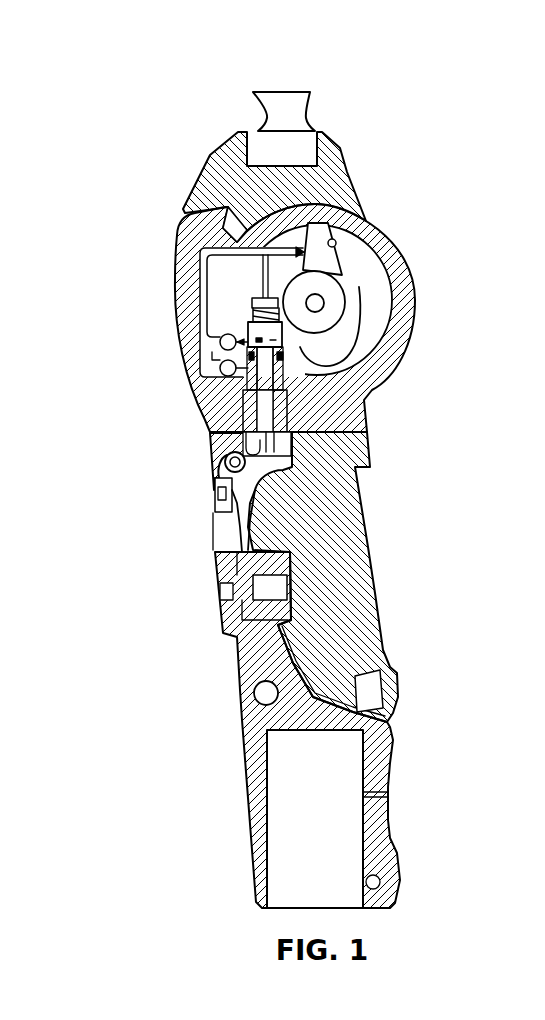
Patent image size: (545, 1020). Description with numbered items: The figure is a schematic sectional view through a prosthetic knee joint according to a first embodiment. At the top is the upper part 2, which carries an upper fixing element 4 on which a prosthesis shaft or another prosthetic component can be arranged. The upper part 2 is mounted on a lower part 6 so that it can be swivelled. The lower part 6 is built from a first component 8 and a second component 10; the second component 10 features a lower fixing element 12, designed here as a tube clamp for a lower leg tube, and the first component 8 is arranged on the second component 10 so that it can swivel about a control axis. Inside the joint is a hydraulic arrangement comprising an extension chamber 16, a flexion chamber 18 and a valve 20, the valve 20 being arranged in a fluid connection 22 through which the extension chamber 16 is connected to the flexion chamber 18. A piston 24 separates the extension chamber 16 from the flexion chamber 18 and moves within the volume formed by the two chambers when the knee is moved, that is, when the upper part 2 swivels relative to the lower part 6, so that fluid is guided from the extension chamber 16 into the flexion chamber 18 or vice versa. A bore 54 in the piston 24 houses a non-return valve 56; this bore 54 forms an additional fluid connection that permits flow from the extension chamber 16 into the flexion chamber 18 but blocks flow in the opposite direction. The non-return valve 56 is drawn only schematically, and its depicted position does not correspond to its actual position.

The upper part 2 is at (336, 129).
The upper fixing element 4 is at (289, 104).
The lower part 6 is at (218, 532).
The first component 8 is at (333, 544).
The second component 10 is at (255, 660).
The lower fixing element 12 is at (288, 786).
The extension chamber 16 is at (235, 225).
The flexion chamber 18 is at (373, 303).
The valve 20 is at (247, 401).
The fluid connection 22 is at (204, 300).
The piston 24 is at (327, 273).
The bore 54 is at (313, 223).
The non-return valve 56 is at (336, 240).